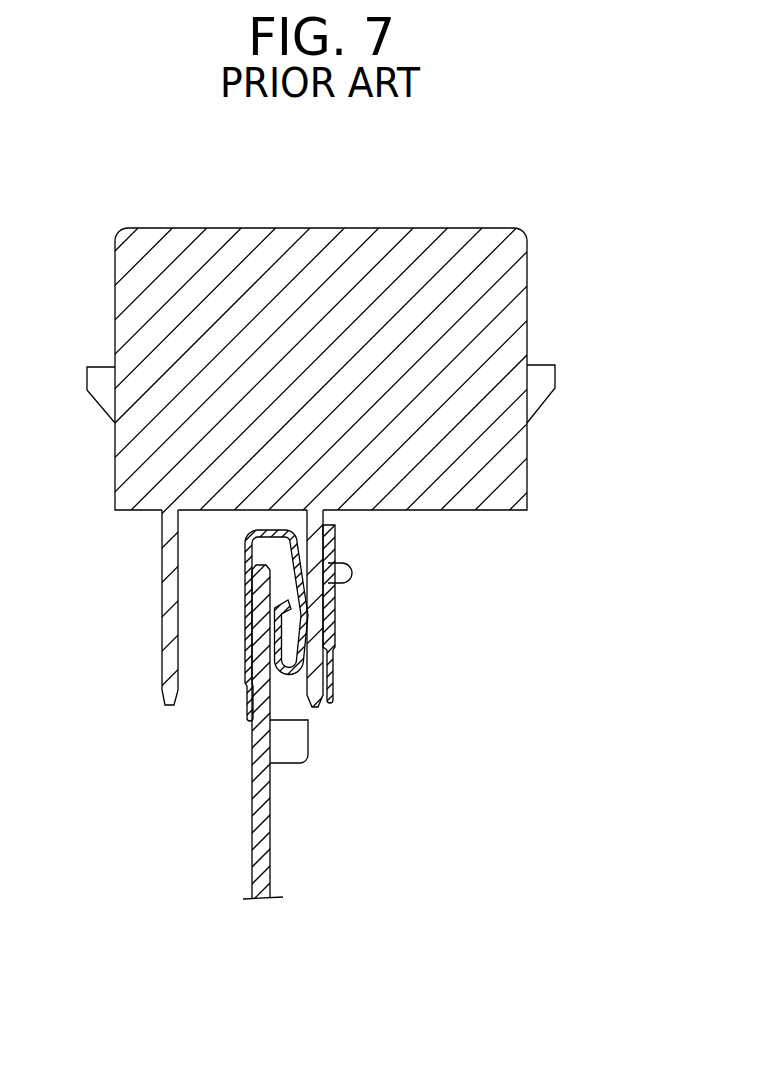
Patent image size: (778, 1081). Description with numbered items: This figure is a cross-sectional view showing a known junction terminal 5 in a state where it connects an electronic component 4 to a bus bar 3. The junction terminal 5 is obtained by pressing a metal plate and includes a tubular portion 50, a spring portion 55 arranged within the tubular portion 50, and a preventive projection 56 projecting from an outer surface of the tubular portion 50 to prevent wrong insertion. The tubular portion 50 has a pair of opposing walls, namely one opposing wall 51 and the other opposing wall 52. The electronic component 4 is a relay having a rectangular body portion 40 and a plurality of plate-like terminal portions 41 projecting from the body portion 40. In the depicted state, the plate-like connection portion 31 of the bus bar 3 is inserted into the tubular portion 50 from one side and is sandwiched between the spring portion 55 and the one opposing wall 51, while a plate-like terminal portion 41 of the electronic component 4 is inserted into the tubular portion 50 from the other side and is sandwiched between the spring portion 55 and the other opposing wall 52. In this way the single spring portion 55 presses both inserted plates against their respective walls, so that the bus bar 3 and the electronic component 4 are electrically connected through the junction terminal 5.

The bus bar 3 is at (296, 730).
The electronic component 4 is at (389, 422).
The junction terminal 5 is at (339, 685).
The plate-like connection portion 31 is at (268, 597).
The rectangular body portion 40 is at (490, 302).
The plate-like terminal portion 41 is at (170, 550).
The tubular portion 50 is at (276, 667).
The opposing wall 51 is at (248, 640).
The opposing wall 52 is at (324, 620).
The spring portion 55 is at (290, 682).
The preventive projection 56 is at (343, 572).